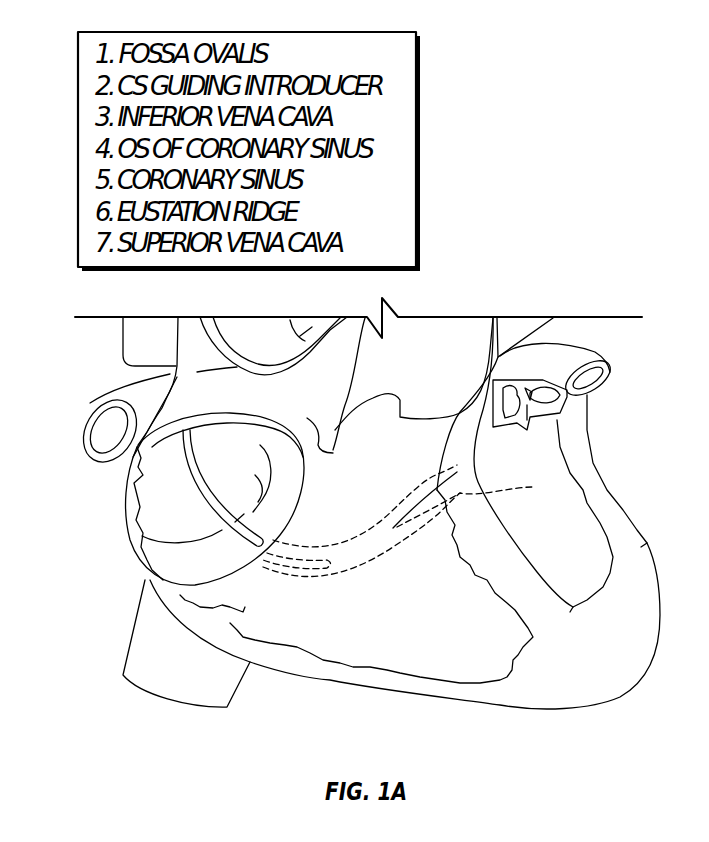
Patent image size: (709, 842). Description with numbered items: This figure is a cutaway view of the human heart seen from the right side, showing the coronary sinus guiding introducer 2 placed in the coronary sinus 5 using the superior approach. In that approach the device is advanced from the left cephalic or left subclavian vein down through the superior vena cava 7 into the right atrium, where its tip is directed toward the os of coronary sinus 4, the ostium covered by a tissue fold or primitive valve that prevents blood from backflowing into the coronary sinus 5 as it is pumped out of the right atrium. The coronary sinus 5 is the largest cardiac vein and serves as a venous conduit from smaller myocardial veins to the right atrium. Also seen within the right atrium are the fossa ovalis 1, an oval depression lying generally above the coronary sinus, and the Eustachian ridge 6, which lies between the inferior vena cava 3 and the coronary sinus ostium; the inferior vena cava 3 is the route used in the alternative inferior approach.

The fossa ovalis 1 is at (246, 478).
The coronary sinus guiding introducer 2 is at (206, 488).
The inferior vena cava 3 is at (172, 534).
The os of coronary sinus 4 is at (229, 539).
The coronary sinus 5 is at (398, 521).
The Eustachian ridge 6 is at (182, 554).
The superior vena cava 7 is at (232, 424).